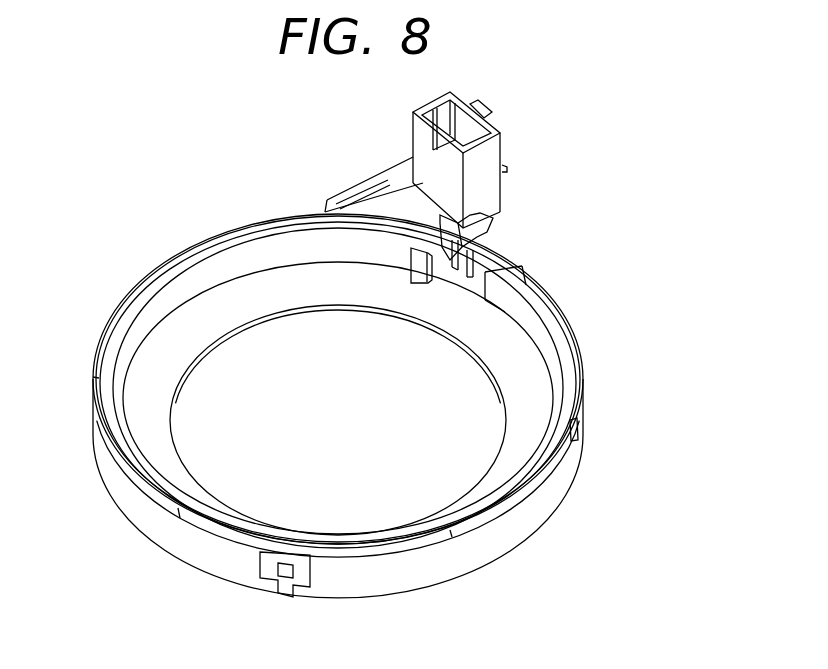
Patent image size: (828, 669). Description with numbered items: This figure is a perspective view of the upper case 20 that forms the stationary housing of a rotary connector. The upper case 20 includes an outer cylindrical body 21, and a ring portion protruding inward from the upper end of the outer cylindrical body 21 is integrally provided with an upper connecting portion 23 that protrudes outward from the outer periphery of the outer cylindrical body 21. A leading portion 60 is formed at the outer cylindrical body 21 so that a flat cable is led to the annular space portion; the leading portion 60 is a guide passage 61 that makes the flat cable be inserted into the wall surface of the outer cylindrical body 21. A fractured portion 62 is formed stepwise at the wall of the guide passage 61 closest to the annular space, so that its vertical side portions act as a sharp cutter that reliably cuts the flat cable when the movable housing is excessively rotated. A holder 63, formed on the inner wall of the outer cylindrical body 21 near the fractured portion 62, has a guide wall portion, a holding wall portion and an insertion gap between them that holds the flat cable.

The upper case 20 is at (503, 560).
The outer cylindrical body 21 is at (508, 305).
The upper connecting portion 23 is at (502, 160).
The leading portion 60 is at (485, 298).
The guide passage 61 is at (477, 255).
The fractured portion 62 is at (463, 236).
The holder 63 is at (408, 271).